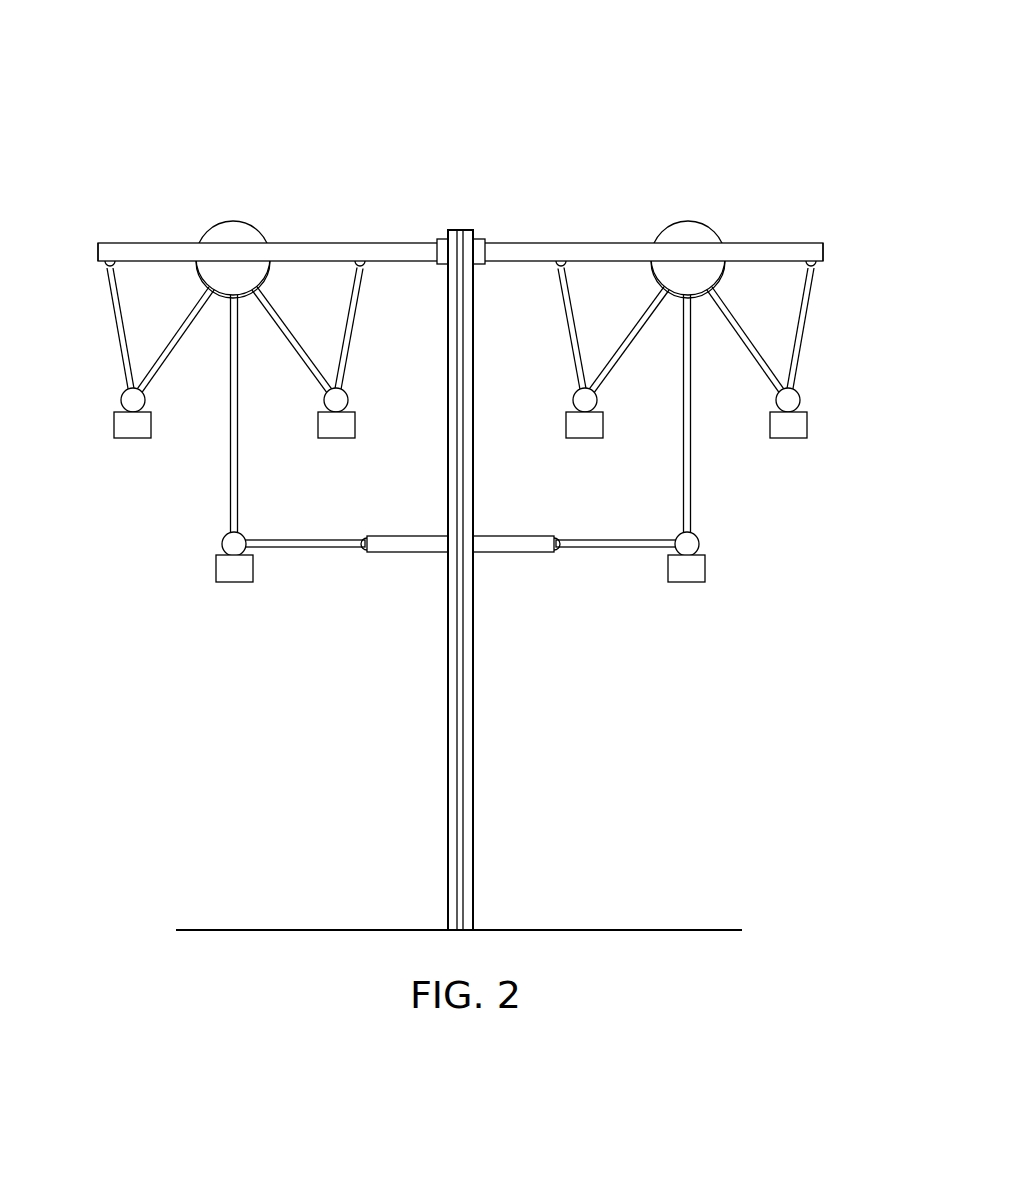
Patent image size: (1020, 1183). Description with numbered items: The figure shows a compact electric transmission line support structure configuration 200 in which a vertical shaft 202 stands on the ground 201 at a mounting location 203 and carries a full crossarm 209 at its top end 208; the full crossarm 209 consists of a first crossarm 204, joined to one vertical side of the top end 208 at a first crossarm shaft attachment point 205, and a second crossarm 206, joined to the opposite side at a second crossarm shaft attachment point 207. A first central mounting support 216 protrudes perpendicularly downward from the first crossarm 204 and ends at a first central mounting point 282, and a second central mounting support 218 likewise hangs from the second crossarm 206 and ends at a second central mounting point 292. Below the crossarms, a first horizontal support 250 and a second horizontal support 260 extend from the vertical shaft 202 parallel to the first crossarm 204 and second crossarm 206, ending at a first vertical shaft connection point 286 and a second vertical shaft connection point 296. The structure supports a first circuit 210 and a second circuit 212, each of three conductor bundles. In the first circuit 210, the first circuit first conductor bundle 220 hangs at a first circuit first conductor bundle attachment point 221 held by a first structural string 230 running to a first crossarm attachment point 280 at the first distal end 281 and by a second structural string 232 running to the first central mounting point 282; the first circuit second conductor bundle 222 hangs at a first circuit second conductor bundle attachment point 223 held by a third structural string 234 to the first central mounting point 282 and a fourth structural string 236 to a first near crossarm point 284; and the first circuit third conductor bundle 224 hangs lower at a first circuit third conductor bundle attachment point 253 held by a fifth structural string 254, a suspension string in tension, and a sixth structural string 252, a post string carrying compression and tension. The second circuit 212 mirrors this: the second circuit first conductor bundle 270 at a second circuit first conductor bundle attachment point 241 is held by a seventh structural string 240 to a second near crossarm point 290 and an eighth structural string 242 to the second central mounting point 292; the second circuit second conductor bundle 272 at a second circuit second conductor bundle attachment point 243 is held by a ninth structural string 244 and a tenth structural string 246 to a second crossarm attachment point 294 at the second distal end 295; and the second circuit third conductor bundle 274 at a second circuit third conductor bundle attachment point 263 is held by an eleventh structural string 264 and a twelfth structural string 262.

The compact electric transmission line support structure configuration 200 is at (712, 100).
The ground 201 is at (632, 930).
The vertical shaft 202 is at (476, 738).
The mounting location 203 is at (474, 928).
The first crossarm 204 is at (265, 243).
The first crossarm shaft attachment point 205 is at (442, 238).
The second crossarm 206 is at (655, 243).
The second crossarm shaft attachment point 207 is at (480, 238).
The top end 208 is at (527, 198).
The full crossarm 209 is at (396, 198).
The first circuit 210 is at (203, 580).
The second circuit 212 is at (718, 580).
The first central mounting support 216 is at (270, 283).
The second central mounting support 218 is at (651, 283).
The first circuit first conductor bundle 220 is at (132, 440).
The first circuit first conductor bundle attachment point 221 is at (121, 402).
The first circuit second conductor bundle 222 is at (337, 440).
The first circuit second conductor bundle attachment point 223 is at (348, 403).
The first circuit third conductor bundle 224 is at (233, 583).
The first structural string 230 is at (121, 352).
The second structural string 232 is at (175, 348).
The third structural string 234 is at (296, 352).
The fourth structural string 236 is at (349, 352).
The seventh structural string 240 is at (572, 352).
The second circuit first conductor bundle attachment point 241 is at (573, 402).
The eighth structural string 242 is at (626, 352).
The second circuit second conductor bundle attachment point 243 is at (800, 403).
The ninth structural string 244 is at (746, 348).
The tenth structural string 246 is at (800, 352).
The first horizontal support 250 is at (405, 553).
The sixth structural string 252 is at (318, 548).
The first circuit third conductor bundle attachment point 253 is at (222, 545).
The fifth structural string 254 is at (239, 470).
The second horizontal support 260 is at (512, 553).
The twelfth structural string 262 is at (600, 548).
The second circuit third conductor bundle attachment point 263 is at (699, 545).
The eleventh structural string 264 is at (683, 470).
The second circuit first conductor bundle 270 is at (584, 440).
The second circuit second conductor bundle 272 is at (789, 440).
The second circuit third conductor bundle 274 is at (688, 583).
The first crossarm attachment point 280 is at (108, 268).
The first distal end 281 is at (98, 238).
The first central mounting point 282 is at (196, 280).
The first near crossarm point 284 is at (363, 270).
The first vertical shaft connection point 286 is at (364, 538).
The second near crossarm point 290 is at (559, 270).
The second central mounting point 292 is at (725, 280).
The second crossarm attachment point 294 is at (815, 270).
The second distal end 295 is at (824, 238).
The second vertical shaft connection point 296 is at (557, 538).